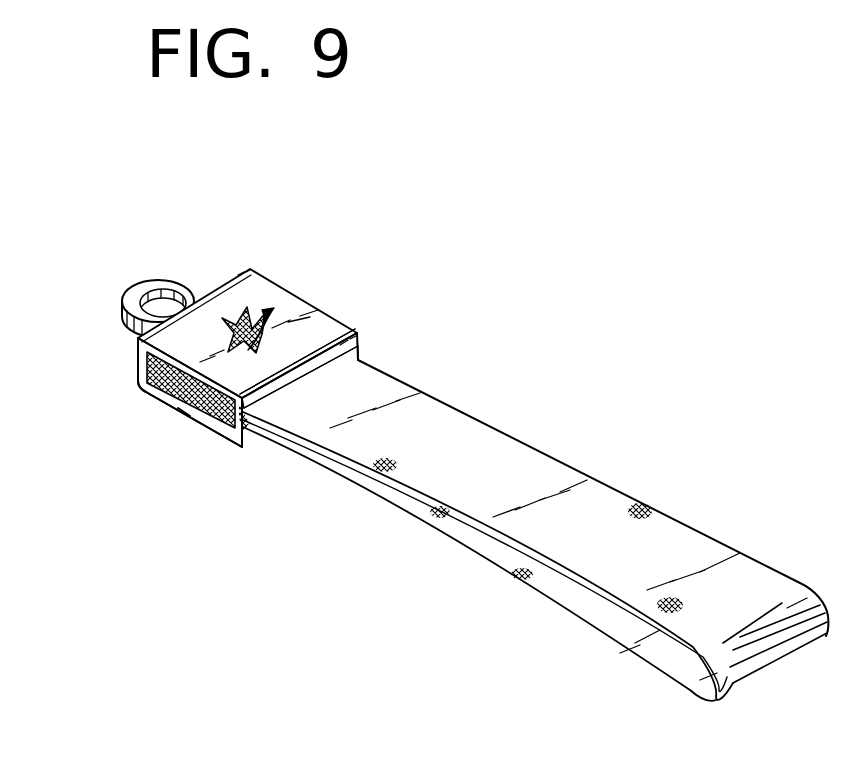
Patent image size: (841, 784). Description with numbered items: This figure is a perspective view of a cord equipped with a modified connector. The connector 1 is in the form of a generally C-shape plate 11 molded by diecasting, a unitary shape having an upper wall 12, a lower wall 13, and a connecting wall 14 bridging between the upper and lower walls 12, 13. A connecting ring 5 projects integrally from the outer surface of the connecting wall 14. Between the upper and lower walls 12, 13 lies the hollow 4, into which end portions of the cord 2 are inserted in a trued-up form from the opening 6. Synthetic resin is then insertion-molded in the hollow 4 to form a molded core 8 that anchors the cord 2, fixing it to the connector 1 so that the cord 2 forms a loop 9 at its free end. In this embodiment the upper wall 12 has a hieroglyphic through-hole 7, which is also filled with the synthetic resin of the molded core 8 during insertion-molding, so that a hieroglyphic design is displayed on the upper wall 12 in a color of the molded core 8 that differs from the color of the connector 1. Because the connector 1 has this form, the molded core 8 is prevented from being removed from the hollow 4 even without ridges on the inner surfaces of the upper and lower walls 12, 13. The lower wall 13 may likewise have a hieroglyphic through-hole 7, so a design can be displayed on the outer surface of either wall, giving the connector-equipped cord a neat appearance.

The connector 1 is at (221, 262).
The cord 2 is at (467, 430).
The hollow 4 is at (183, 412).
The connecting ring 5 is at (140, 283).
The opening 6 is at (323, 382).
The hieroglyphic through-hole 7 is at (250, 317).
The molded core 8 is at (197, 420).
The loop 9 is at (764, 653).
The C-shape plate 11 is at (315, 328).
The upper wall 12 is at (150, 370).
The lower wall 13 is at (167, 407).
The connecting wall 14 is at (136, 355).